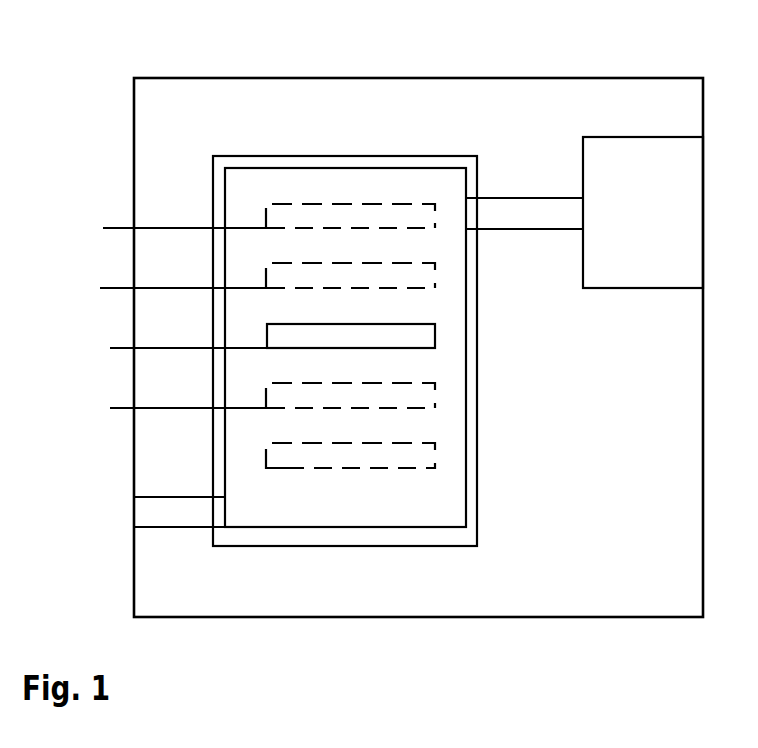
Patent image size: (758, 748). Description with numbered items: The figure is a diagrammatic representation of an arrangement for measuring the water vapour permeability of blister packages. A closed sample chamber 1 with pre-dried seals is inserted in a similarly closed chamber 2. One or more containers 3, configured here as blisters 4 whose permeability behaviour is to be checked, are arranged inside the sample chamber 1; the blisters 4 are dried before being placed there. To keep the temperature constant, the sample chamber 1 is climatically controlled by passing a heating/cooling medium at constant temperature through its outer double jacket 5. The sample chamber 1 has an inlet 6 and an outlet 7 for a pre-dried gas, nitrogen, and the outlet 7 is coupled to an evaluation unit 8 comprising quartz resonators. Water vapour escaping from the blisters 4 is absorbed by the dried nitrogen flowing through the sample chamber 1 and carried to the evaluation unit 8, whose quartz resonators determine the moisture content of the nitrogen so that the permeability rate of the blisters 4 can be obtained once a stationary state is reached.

The sample chamber 1 is at (436, 152).
The chamber 2 is at (265, 78).
The container 3 is at (255, 214).
The blister 4 is at (178, 317).
The outer double jacket 5 is at (224, 167).
The inlet 6 is at (152, 510).
The outlet 7 is at (523, 215).
The evaluation unit 8 is at (643, 212).